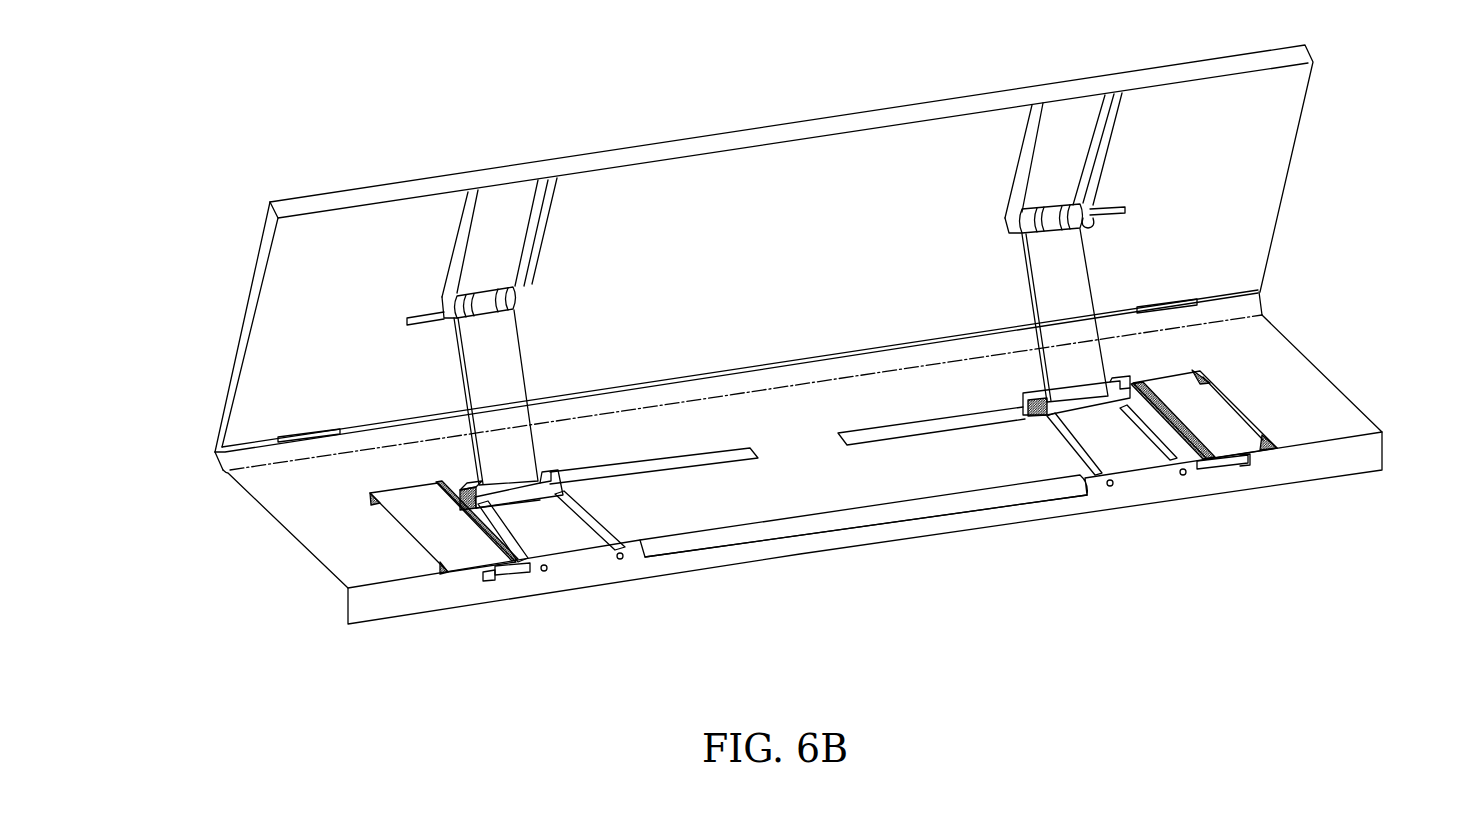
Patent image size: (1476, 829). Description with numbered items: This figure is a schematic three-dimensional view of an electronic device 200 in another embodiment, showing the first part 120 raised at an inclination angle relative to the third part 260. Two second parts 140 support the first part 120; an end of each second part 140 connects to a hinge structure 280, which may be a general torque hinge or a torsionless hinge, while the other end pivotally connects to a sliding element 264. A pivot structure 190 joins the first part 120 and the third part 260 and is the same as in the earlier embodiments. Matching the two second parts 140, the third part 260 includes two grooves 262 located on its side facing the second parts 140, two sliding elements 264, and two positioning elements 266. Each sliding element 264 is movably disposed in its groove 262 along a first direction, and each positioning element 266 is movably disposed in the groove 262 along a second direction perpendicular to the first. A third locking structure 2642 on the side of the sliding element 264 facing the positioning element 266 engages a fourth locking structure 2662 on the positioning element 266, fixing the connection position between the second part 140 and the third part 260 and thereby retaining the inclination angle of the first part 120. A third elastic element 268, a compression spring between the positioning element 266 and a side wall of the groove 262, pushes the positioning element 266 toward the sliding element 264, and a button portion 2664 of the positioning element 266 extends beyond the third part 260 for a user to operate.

The portable electronic device 200 is at (258, 124).
The first part 120 is at (797, 130).
The second part 140 is at (511, 348).
The pivot structure 190 is at (202, 455).
The hinge structure 280 is at (538, 300).
The third part 260 is at (1382, 450).
The groove 262 is at (603, 535).
The sliding element 264 is at (592, 545).
The third locking structure 2642 is at (464, 487).
The fourth locking structure 2662 is at (527, 499).
The button portion 2664 is at (508, 580).
The positioning element 266 is at (433, 520).
The third elastic element 268 is at (452, 577).